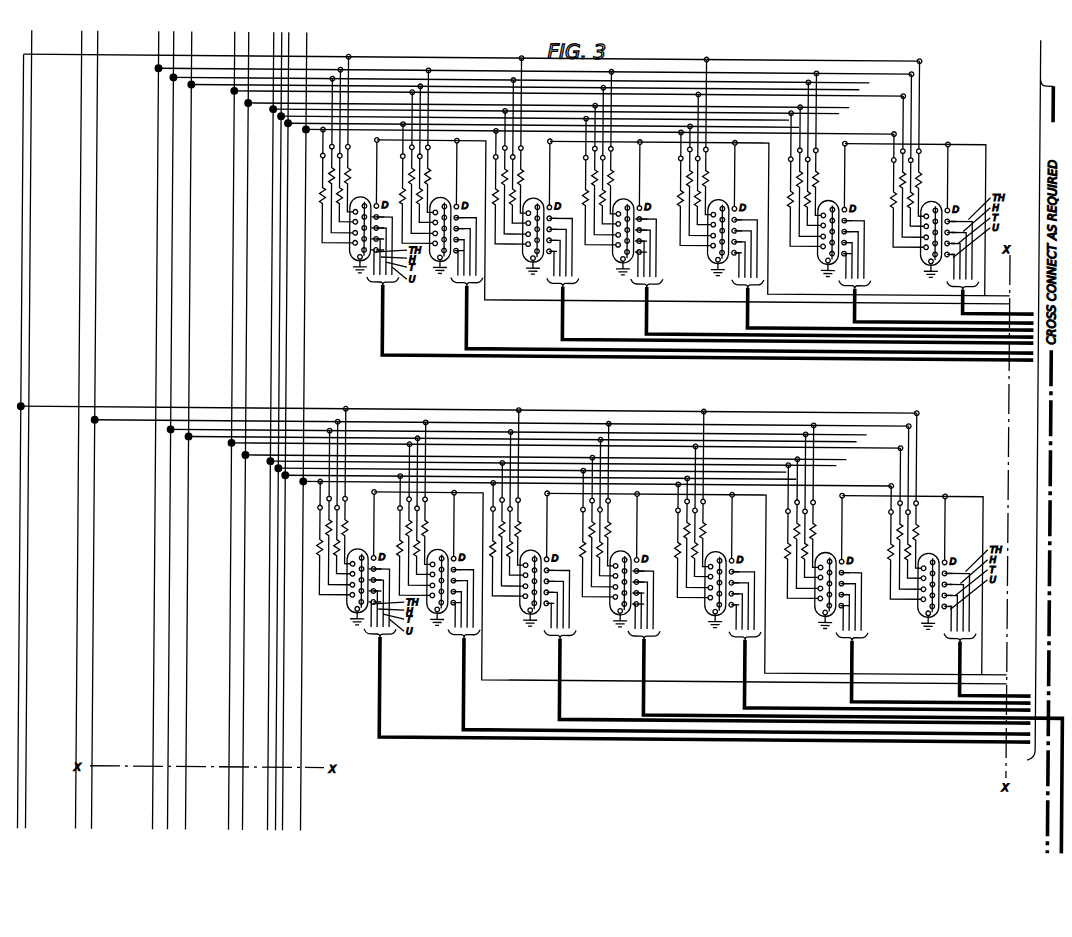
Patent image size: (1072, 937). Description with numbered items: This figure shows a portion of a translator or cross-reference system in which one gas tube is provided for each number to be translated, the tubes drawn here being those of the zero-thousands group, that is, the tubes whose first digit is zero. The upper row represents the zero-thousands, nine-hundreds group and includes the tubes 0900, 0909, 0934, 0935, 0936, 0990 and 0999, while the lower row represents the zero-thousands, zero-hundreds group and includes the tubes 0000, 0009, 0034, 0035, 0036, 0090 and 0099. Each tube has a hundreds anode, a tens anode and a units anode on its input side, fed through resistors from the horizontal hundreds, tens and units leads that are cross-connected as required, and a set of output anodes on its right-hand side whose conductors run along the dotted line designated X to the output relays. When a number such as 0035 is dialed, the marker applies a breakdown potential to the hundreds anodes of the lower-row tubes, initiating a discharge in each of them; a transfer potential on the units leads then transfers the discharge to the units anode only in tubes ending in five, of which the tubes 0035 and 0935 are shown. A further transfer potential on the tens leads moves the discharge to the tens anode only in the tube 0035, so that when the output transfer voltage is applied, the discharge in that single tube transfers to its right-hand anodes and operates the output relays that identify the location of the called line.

The tube 0900 is at (676, 207).
The tube 0909 is at (716, 210).
The tube 0934 is at (763, 200).
The tube 0935 is at (808, 203).
The tube 0936 is at (855, 193).
The tube 0990 is at (911, 197).
The tube 0999 is at (963, 186).
The tube 0000 is at (674, 574).
The tube 0009 is at (713, 577).
The tube 0034 is at (760, 566).
The tube 0035 is at (820, 637).
The tube 0036 is at (852, 559).
The tube 0090 is at (908, 563).
The tube 0099 is at (960, 553).